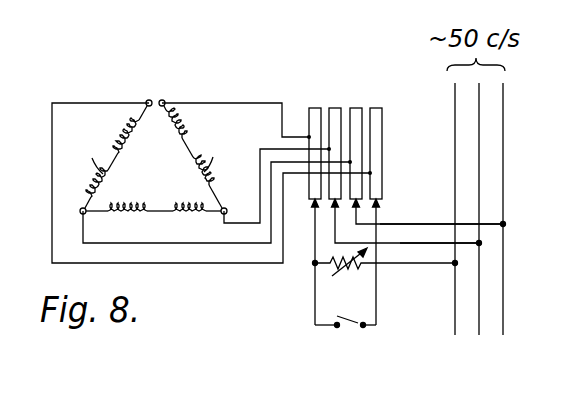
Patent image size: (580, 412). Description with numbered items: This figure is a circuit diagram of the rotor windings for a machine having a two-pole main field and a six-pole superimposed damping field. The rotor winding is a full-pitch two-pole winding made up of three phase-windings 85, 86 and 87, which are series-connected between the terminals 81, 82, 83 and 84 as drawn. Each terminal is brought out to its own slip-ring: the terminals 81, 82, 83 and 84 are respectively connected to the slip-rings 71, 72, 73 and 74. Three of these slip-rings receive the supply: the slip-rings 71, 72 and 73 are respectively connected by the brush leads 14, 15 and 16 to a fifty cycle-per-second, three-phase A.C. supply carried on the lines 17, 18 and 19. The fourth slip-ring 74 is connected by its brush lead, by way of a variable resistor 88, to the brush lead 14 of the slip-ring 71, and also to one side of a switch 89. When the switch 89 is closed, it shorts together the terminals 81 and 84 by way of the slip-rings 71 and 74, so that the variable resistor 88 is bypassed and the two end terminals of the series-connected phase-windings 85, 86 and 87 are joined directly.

The brush lead 14 is at (440, 264).
The brush lead 15 is at (412, 245).
The brush lead 16 is at (396, 225).
The supply line 17 is at (454, 141).
The supply line 18 is at (478, 173).
The supply line 19 is at (502, 200).
The slip-ring 71 is at (381, 108).
The slip-ring 72 is at (358, 108).
The slip-ring 73 is at (334, 108).
The slip-ring 74 is at (313, 108).
The terminal 81 is at (148, 99).
The terminal 82 is at (81, 212).
The terminal 83 is at (237, 200).
The terminal 84 is at (163, 99).
The phase-winding 85 is at (116, 145).
The phase-winding 86 is at (187, 205).
The phase-winding 87 is at (186, 133).
The variable resistor 88 is at (345, 279).
The switch 89 is at (353, 325).